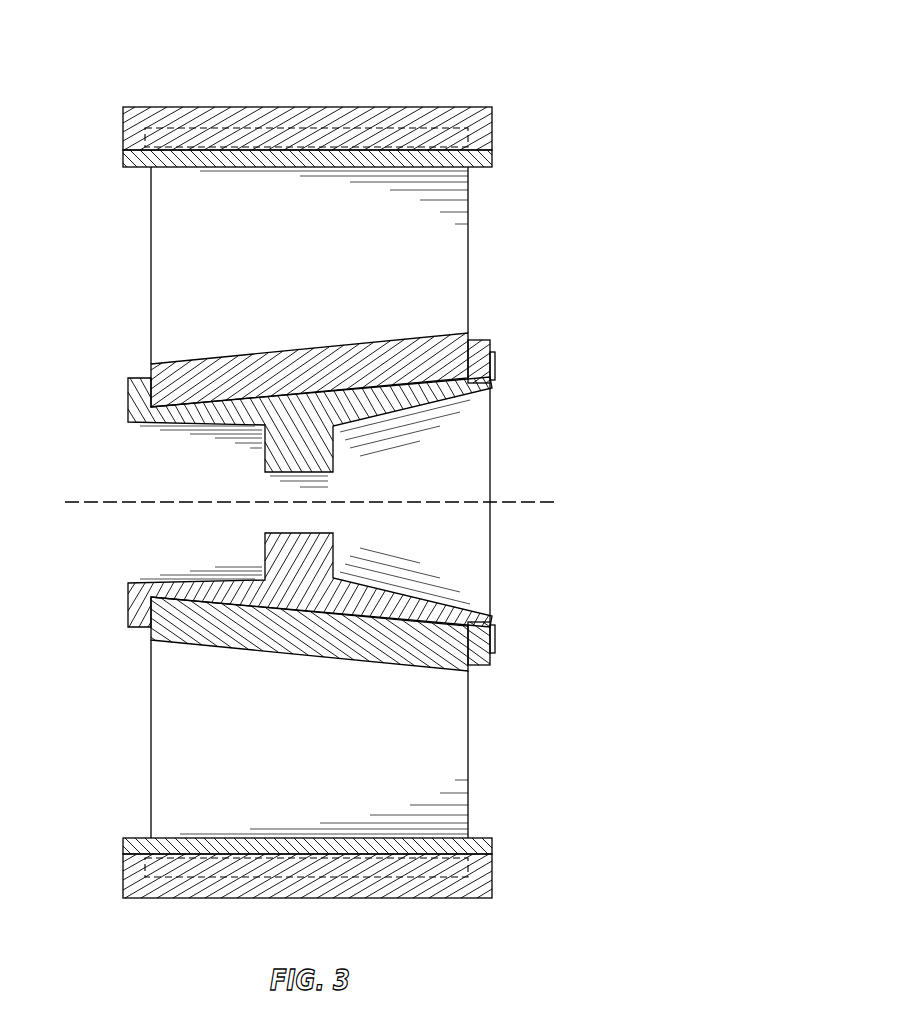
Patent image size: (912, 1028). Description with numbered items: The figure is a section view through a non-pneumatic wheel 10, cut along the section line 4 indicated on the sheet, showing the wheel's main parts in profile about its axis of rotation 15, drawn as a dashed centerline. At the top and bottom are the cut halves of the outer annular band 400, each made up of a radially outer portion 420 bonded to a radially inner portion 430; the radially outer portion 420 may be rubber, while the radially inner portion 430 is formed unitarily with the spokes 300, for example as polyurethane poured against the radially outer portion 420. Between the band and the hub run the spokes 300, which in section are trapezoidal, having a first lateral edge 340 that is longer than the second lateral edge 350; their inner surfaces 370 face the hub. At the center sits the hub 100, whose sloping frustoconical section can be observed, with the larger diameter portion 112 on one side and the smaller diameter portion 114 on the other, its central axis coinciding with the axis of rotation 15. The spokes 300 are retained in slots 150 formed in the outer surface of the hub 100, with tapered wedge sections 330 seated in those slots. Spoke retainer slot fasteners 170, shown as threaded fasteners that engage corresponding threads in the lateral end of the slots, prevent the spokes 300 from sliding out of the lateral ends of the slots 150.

The non-pneumatic wheel 10 is at (506, 46).
The section line 4- 4 is at (309, 107).
The outer annular band 400 is at (308, 500).
The radially outer portion 420 is at (123, 127).
The radially inner portion 430 is at (123, 161).
The spokes 300 is at (310, 502).
The second lateral edge 350 is at (468, 213).
The body inner surface 370 is at (190, 172).
The first lateral edge 340 is at (151, 265).
The tapered wedge ring 330 is at (418, 352).
The spoke retainer slot fasteners 170 is at (495, 365).
The hub 100 is at (309, 502).
The slots 150 is at (145, 390).
The smaller diameter portion 114 is at (128, 440).
The larger diameter portion 112 is at (492, 445).
The axis of rotation 15 is at (535, 504).